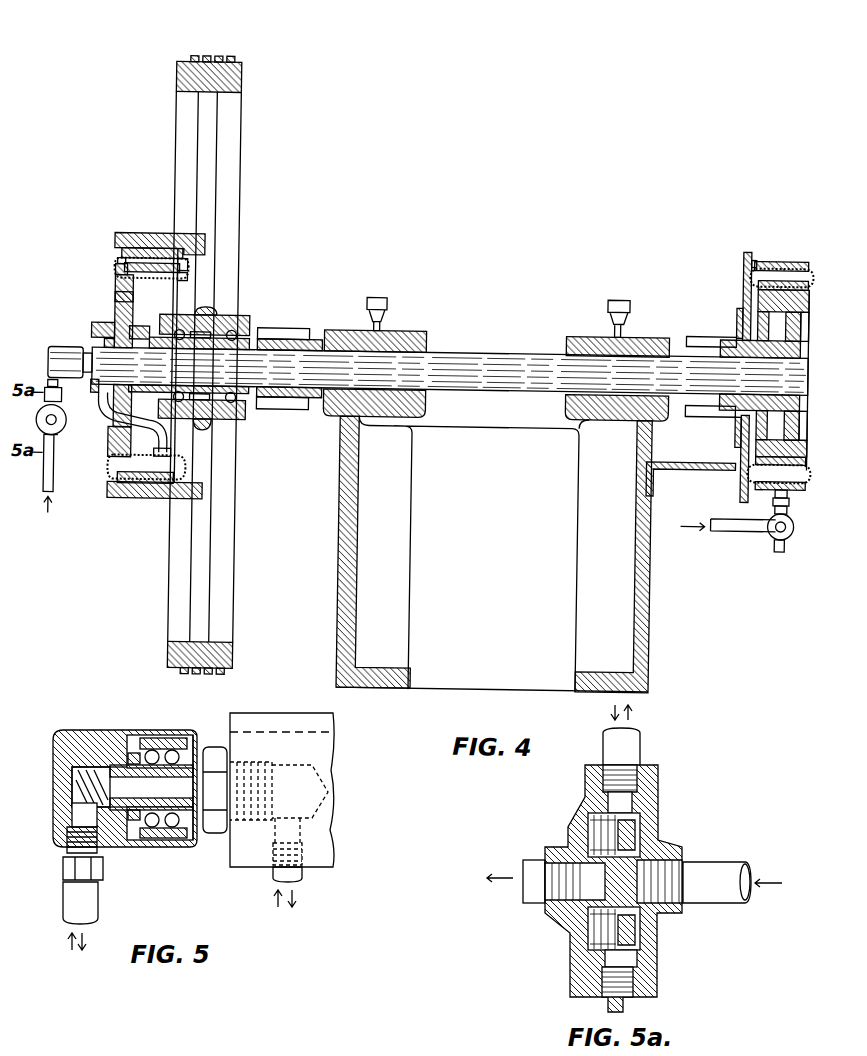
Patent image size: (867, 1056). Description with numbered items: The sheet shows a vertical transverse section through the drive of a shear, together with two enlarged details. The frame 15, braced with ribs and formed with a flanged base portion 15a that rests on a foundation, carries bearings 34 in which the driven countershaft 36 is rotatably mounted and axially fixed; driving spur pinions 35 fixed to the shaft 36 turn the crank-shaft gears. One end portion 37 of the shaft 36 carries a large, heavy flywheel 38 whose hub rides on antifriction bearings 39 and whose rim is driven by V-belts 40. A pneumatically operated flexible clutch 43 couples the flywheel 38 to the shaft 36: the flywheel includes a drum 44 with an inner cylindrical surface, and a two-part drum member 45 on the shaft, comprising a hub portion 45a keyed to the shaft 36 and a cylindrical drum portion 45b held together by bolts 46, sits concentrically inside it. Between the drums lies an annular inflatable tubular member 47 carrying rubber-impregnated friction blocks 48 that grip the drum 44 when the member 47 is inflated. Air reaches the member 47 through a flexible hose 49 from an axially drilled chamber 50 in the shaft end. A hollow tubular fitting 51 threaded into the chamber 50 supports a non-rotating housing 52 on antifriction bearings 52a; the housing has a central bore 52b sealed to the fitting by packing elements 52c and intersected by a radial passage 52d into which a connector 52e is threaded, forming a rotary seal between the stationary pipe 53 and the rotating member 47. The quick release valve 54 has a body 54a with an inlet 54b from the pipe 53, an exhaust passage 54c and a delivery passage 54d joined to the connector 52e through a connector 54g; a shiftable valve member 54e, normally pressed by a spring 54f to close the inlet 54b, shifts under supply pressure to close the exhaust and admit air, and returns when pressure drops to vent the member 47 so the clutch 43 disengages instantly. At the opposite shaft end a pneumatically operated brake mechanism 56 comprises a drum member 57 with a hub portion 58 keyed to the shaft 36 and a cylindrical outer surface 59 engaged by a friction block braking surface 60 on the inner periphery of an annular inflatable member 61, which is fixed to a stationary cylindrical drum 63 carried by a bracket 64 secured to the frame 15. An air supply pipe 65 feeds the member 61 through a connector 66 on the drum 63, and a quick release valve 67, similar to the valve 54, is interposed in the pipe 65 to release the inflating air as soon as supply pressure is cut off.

In FIG. 4, the frame 15 is at (342, 510).
In FIG. 4, the flanged base portion 15a is at (394, 667).
In FIG. 4, the bearings 34 is at (402, 338).
In FIG. 4, the driving spur pinion 35 is at (292, 332).
In FIG. 4, the driven countershaft 36 is at (486, 362).
In FIG. 5, the driven countershaft 36 is at (248, 868).
In FIG. 4, the end portion of shaft 37 is at (204, 343).
In FIG. 5, the end portion of shaft 37 is at (262, 722).
In FIG. 4, the flywheel 38 is at (238, 88).
In FIG. 4, the antifriction bearings 39 is at (177, 330).
In FIG. 4, the V-belts 40 is at (223, 59).
In FIG. 4, the pneumatically operated flexible clutch 43 is at (116, 279).
In FIG. 4, the drum 44 is at (152, 238).
In FIG. 4, the drum member 45 is at (115, 271).
In FIG. 4, the hub portion 45a is at (113, 304).
In FIG. 4, the cylindrical drum portion 45b is at (178, 284).
In FIG. 4, the bolts 46 is at (116, 286).
In FIG. 4, the annular inflatable tubular member 47 is at (185, 269).
In FIG. 4, the friction blocks 48 is at (122, 259).
In FIG. 4, the flexible hose 49 is at (167, 448).
In FIG. 5, the flexible hose 49 is at (303, 875).
In FIG. 4, the axially drilled chamber 50 is at (99, 330).
In FIG. 5, the axially drilled chamber 50 is at (300, 762).
In FIG. 4, the hollow tubular fitting 51 is at (87, 352).
In FIG. 5, the hollow tubular fitting 51 is at (215, 834).
In FIG. 4, the housing 52 is at (48, 353).
In FIG. 5, the housing 52 is at (75, 730).
In FIG. 5, the antifriction bearings 52a is at (172, 742).
In FIG. 5, the central bore 52b is at (120, 812).
In FIG. 5, the packing elements 52c is at (134, 752).
In FIG. 5, the radial passage 52d is at (77, 813).
In FIG. 4, the connector 52e is at (58, 389).
In FIG. 5, the connector 52e is at (67, 852).
In FIG. 4, the pipe 53 is at (57, 485).
In FIG. 5A, the pipe 53 is at (723, 900).
In FIG. 4, the quick release valve 54 is at (64, 428).
In FIG. 5A, the quick release valve 54 is at (560, 967).
In FIG. 5A, the valve body 54a is at (660, 807).
In FIG. 4, the inlet 54b is at (61, 442).
In FIG. 5A, the inlet 54b is at (688, 857).
In FIG. 5A, the exhaust passage 54c is at (535, 855).
In FIG. 5A, the delivery passage 54d is at (645, 765).
In FIG. 5A, the shiftable valve member 54e is at (620, 882).
In FIG. 5A, the spring 54f is at (598, 930).
In FIG. 5, the connector 54g is at (68, 906).
In FIG. 5A, the connector 54g is at (625, 752).
In FIG. 4, the pneumatically operated brake mechanism 56 is at (741, 265).
In FIG. 4, the drum member 57 is at (781, 311).
In FIG. 4, the hub portion 58 is at (767, 337).
In FIG. 4, the cylindrical outer surface 59 is at (737, 295).
In FIG. 4, the friction block braking surface 60 is at (763, 447).
In FIG. 4, the annular inflatable member 61 is at (813, 264).
In FIG. 4, the stationary cylindrical drum 63 is at (778, 261).
In FIG. 4, the bracket 64 is at (672, 468).
In FIG. 4, the air supply pipe 65 is at (720, 525).
In FIG. 4, the connector 66 is at (775, 491).
In FIG. 4, the quick release valve 67 is at (776, 531).